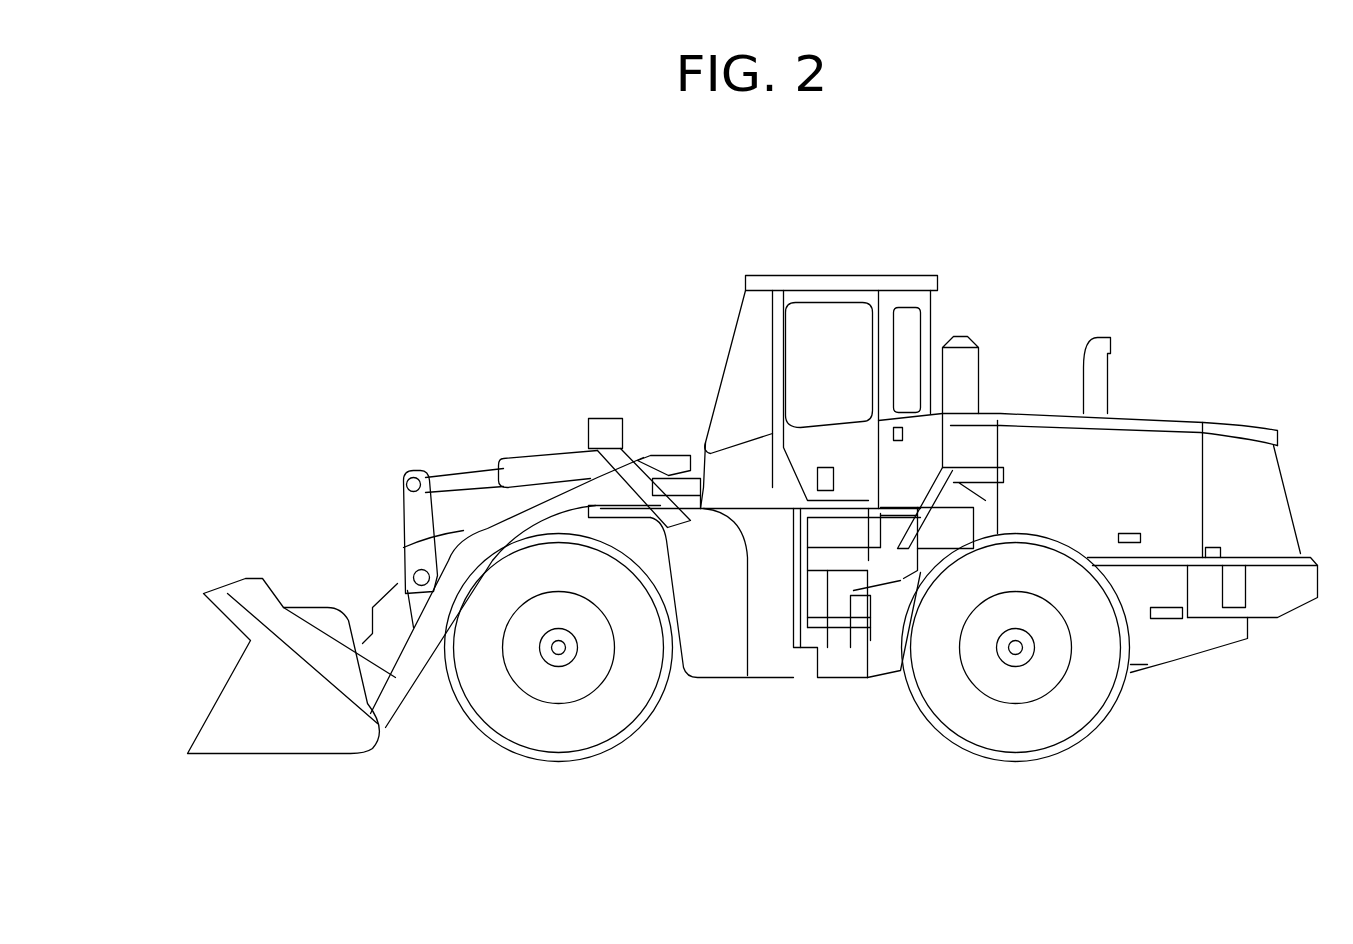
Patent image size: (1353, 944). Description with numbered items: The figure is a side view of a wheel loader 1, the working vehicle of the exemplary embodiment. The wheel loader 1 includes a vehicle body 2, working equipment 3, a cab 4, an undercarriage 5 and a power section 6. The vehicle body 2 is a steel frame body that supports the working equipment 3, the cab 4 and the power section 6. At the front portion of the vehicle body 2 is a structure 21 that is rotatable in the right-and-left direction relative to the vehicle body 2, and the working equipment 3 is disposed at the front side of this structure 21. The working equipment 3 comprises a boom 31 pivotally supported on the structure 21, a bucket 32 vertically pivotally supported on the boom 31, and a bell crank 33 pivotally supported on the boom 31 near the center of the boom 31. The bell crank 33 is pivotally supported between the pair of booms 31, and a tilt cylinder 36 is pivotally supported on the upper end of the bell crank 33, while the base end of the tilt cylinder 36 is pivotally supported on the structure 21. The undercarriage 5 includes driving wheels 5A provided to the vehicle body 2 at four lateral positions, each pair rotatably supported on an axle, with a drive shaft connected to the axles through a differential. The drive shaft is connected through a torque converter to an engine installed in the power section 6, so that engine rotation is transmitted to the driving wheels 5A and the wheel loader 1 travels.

The wheel loader 1 is at (938, 150).
The vehicle body 2 is at (1249, 691).
The working equipment 3 is at (581, 346).
The cab 4 is at (848, 270).
The undercarriage 5 is at (1133, 756).
The driving wheels 5A is at (563, 742).
The power section 6 is at (1180, 388).
The structure 21 is at (720, 657).
The boom 31 is at (550, 517).
The bucket 32 is at (233, 578).
The bell crank 33 is at (400, 521).
The tilt cylinder 36 is at (550, 460).